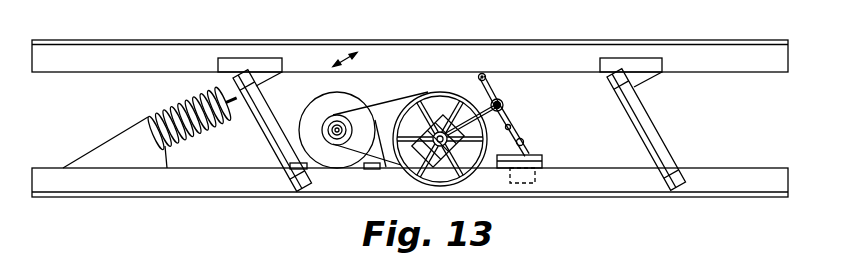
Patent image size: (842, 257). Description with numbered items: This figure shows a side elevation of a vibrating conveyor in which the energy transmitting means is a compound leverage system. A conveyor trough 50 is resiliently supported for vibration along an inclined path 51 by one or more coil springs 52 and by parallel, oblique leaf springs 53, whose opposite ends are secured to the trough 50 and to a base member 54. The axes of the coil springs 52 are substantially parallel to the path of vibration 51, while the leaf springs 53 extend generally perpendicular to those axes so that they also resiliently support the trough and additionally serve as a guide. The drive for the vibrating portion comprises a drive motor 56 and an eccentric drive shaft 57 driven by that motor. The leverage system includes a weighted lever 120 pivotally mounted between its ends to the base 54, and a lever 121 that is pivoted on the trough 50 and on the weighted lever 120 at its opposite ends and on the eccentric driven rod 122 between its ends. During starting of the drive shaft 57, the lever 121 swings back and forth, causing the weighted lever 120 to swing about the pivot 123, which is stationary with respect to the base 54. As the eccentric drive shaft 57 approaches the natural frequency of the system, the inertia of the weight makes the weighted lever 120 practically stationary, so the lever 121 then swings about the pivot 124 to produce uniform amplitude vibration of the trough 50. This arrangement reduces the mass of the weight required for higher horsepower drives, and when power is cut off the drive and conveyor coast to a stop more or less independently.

The conveyor trough 50 is at (410, 63).
The inclined path 51 is at (343, 56).
The coil spring 52 is at (172, 102).
The leaf spring 53 is at (262, 138).
The base member 54 is at (205, 184).
The drive motor 56 is at (307, 112).
The eccentric drive shaft 57 is at (442, 132).
The weighted lever 120 is at (546, 172).
The lever 121 is at (504, 109).
The eccentric driven rod 122 is at (491, 94).
The pivot 123 is at (525, 142).
The pivot 124 is at (511, 127).